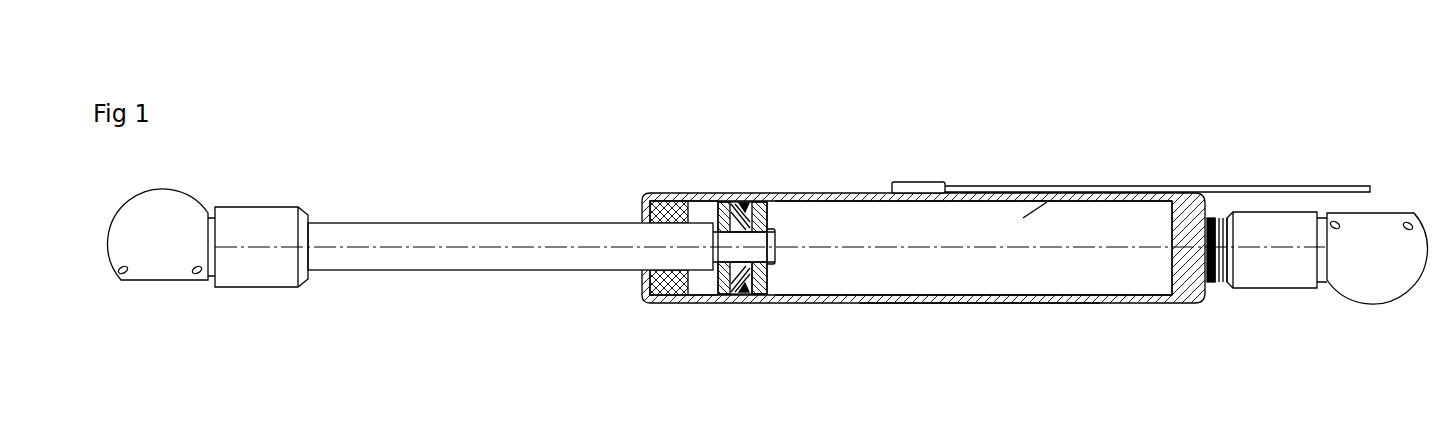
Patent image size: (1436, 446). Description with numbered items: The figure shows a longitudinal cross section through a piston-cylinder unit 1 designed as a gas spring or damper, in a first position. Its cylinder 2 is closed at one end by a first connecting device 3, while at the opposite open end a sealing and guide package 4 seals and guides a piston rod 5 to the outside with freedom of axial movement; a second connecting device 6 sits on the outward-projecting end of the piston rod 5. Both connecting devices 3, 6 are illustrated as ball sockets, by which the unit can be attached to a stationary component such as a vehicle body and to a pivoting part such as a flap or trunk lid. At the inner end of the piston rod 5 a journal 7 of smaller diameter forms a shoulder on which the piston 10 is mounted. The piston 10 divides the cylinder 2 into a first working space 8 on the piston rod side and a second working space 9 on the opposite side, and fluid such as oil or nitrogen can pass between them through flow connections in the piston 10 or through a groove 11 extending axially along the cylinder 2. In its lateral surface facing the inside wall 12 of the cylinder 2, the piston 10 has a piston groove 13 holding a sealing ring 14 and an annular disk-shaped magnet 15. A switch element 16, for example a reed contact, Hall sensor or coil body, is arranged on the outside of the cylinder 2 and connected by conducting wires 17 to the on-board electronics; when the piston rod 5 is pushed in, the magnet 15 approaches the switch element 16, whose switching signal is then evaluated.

The piston-cylinder unit 1 is at (1338, 46).
The cylinder 2 is at (1132, 301).
The first connecting device 3 is at (1374, 258).
The sealing and guide package 4 is at (666, 291).
The piston rod 5 is at (530, 259).
The second connecting device 6 is at (166, 246).
The journal 7 is at (738, 239).
The first working space 8 is at (702, 211).
The second working space 9 is at (1091, 217).
The piston 10 is at (771, 298).
The groove 11 is at (948, 296).
The inside wall 12 is at (1023, 218).
The piston groove 13 is at (728, 296).
The sealing ring 14 is at (745, 206).
The magnet 15 is at (750, 291).
The switch element 16 is at (906, 187).
The conducting wires 17 is at (1351, 190).